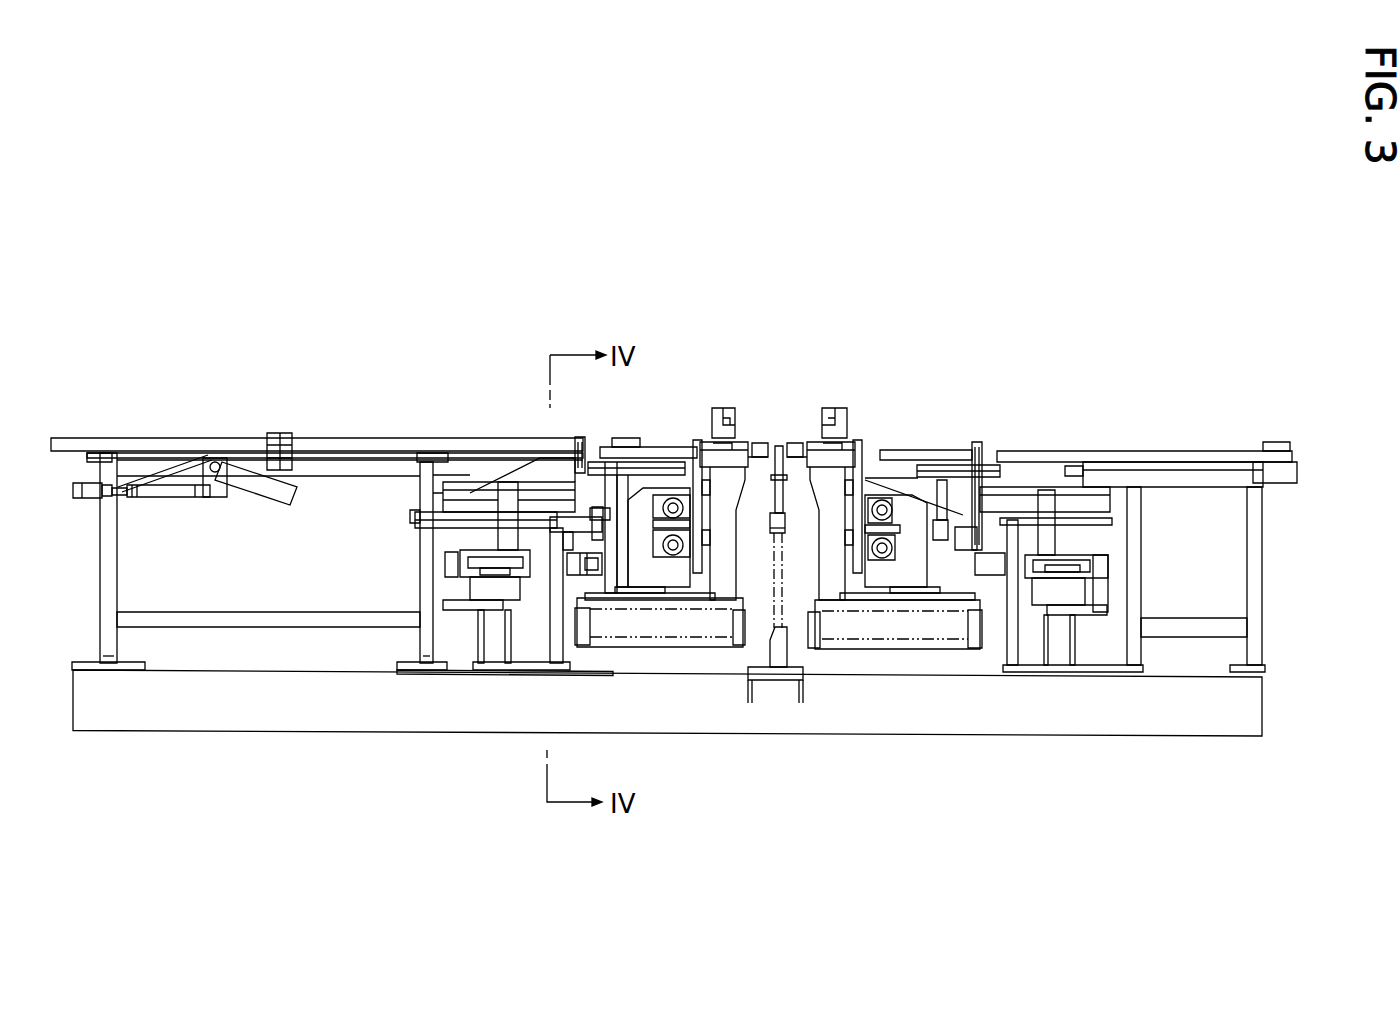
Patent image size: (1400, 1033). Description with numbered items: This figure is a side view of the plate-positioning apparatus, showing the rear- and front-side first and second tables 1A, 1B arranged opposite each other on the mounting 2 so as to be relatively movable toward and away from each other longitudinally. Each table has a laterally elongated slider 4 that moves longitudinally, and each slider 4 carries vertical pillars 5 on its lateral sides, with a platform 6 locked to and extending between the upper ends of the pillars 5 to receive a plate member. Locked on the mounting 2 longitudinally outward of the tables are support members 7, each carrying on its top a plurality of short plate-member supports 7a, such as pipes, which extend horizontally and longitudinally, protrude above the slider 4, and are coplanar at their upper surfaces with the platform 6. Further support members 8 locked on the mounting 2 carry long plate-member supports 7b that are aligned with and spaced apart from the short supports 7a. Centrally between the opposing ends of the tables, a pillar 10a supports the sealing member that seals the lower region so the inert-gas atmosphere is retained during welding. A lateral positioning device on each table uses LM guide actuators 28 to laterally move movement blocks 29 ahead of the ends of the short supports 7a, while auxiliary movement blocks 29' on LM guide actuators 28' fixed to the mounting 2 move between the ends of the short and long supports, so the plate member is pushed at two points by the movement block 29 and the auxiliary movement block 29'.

The first table 1A is at (748, 404).
The second table 1B is at (812, 404).
The mounting 2 is at (275, 712).
The slider 4 is at (663, 650).
The pillar 5 is at (728, 573).
The platform 6 is at (808, 440).
The support member 7 is at (557, 623).
The short plate-member support 7a is at (662, 447).
The long plate-member support 7b is at (346, 438).
The support member 8 is at (100, 553).
The pillar 10a is at (782, 680).
The LM guide actuator 28 is at (812, 488).
The LM guide actuator 28' is at (777, 671).
The movement block 29 is at (794, 456).
The auxiliary movement block 29' is at (782, 455).